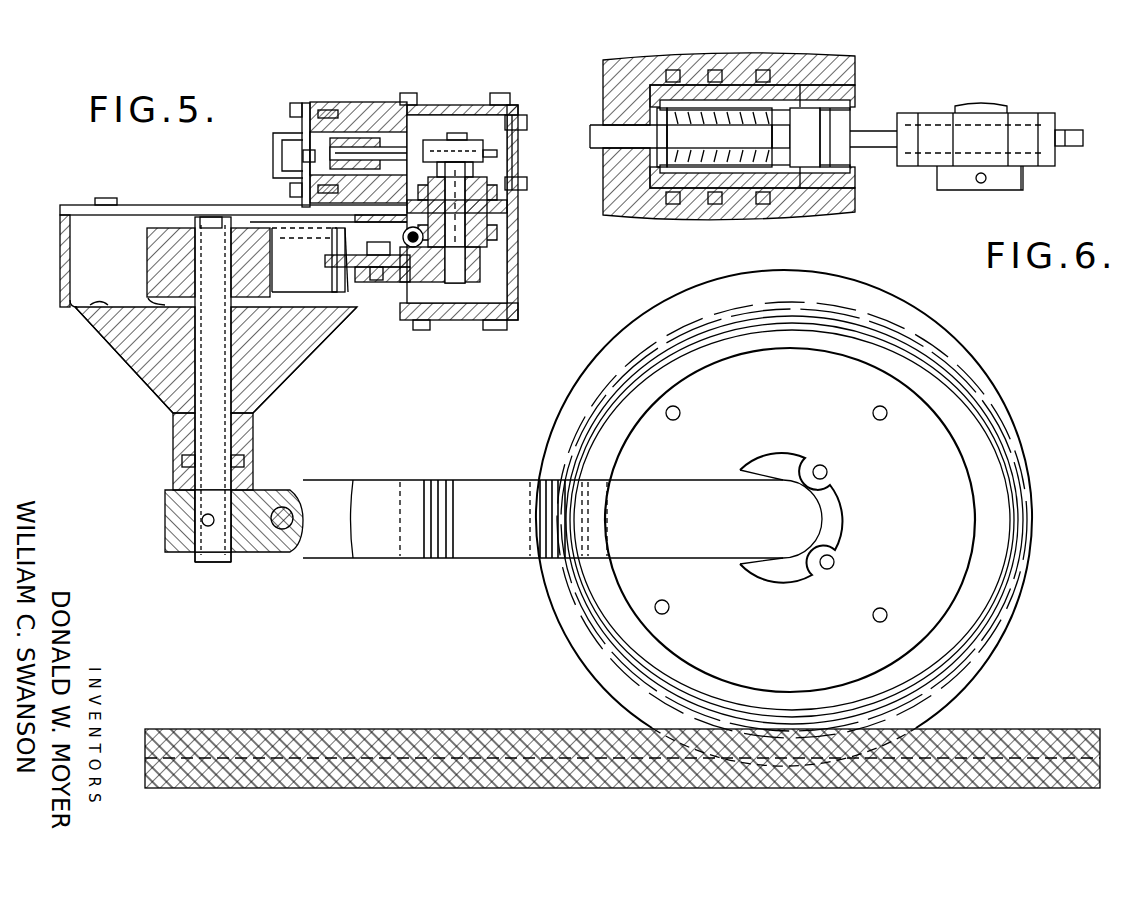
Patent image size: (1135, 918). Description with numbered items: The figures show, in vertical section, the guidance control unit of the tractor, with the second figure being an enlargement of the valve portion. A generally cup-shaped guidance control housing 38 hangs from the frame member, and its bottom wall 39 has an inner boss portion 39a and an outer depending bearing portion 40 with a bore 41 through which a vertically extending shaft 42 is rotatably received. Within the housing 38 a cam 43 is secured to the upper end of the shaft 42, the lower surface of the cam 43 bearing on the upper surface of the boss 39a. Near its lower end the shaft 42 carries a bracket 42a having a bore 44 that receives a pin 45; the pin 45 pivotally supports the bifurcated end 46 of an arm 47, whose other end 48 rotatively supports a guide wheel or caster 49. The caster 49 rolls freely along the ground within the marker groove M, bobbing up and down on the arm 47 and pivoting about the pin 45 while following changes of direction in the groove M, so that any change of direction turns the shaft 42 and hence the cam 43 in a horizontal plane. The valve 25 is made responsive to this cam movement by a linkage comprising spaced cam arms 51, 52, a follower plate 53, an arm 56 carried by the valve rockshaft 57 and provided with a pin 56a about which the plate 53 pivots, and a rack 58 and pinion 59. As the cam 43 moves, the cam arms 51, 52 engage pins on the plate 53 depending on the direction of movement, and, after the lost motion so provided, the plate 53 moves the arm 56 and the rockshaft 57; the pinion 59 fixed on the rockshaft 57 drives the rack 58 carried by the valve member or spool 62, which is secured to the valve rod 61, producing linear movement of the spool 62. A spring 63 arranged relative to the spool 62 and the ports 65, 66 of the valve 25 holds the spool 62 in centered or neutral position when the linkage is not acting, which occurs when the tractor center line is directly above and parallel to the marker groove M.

In FIG. 5, the valve 25 is at (370, 108).
In FIG. 6, the valve 25 is at (853, 62).
In FIG. 5, the guidance control housing 38 is at (50, 257).
In FIG. 5, the bottom wall 39 is at (78, 310).
In FIG. 5, the inner boss portion 39a is at (165, 305).
In FIG. 5, the outer depending bearing portion 40 is at (113, 378).
In FIG. 5, the bore 41 is at (237, 345).
In FIG. 5, the shaft 42 is at (200, 418).
In FIG. 5, the bracket 42a is at (165, 520).
In FIG. 5, the cam 43 is at (175, 228).
In FIG. 5, the bore 44 is at (270, 558).
In FIG. 5, the pin 45 is at (285, 528).
In FIG. 5, the bifurcated end 46 is at (322, 480).
In FIG. 5, the arm 47 is at (424, 480).
In FIG. 5, the other end 48 is at (770, 478).
In FIG. 5, the guide wheel or caster 49 is at (545, 605).
In FIG. 5, the marker groove M is at (314, 729).
In FIG. 5, the cam arm 51 is at (310, 285).
In FIG. 5, the cam arm 52 is at (310, 240).
In FIG. 5, the follower plate 53 is at (372, 255).
In FIG. 5, the arm 56 is at (432, 282).
In FIG. 5, the pin 56a is at (367, 280).
In FIG. 5, the valve rockshaft 57 is at (465, 262).
In FIG. 6, the valve rockshaft 57 is at (967, 184).
In FIG. 5, the rack 58 is at (497, 160).
In FIG. 6, the rack 58 is at (1045, 162).
In FIG. 6, the pinion 59 is at (1012, 180).
In FIG. 6, the valve rod 61 is at (795, 130).
In FIG. 6, the valve member or spool 62 is at (660, 190).
In FIG. 6, the spring 63 is at (740, 108).
In FIG. 6, the port 65 is at (672, 192).
In FIG. 6, the port 66 is at (770, 192).